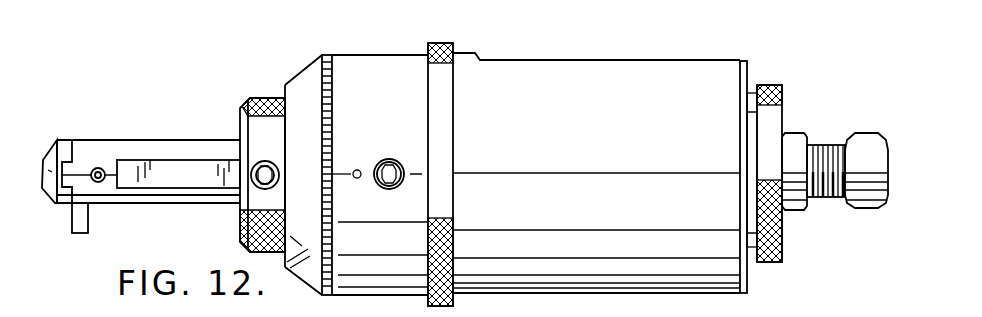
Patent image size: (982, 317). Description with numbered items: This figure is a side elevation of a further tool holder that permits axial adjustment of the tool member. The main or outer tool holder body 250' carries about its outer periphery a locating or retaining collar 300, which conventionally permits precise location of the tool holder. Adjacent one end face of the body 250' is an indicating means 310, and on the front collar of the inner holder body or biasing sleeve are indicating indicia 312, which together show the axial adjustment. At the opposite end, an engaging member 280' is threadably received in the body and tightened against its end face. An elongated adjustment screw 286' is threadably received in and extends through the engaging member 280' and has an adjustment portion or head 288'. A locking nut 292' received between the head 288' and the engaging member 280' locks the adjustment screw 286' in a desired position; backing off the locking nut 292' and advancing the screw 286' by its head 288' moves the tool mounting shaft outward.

The tool holder body 250' is at (600, 160).
The engaging member 280' is at (795, 159).
The adjustment screw 286' is at (854, 138).
The adjustment portion or head 288' is at (880, 158).
The locking nut 292' is at (817, 190).
The locating or retaining collar 300 is at (446, 44).
The hole 310 is at (342, 170).
The indicating indicia 312 is at (322, 118).